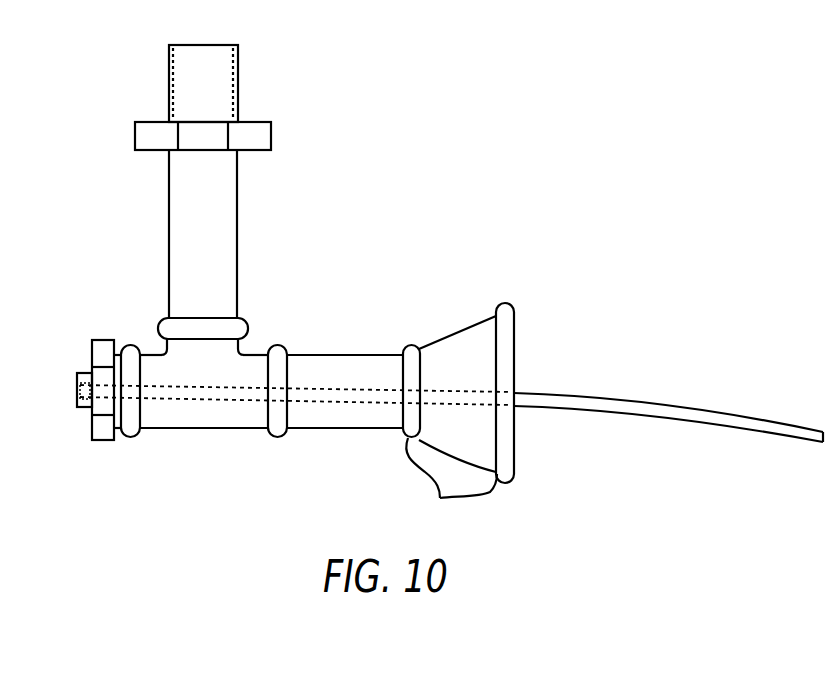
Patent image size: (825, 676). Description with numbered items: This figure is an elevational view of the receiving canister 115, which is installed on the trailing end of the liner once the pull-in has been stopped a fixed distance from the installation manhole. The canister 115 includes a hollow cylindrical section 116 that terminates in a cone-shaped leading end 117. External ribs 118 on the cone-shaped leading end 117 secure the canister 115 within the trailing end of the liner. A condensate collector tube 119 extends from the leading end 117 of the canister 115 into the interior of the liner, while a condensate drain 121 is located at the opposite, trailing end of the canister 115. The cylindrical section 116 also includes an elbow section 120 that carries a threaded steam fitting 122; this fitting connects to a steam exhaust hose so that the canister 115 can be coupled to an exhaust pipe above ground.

The receiving canister 115 is at (416, 286).
The hollow cylindrical section 116 is at (360, 355).
The cone-shaped leading end 117 is at (477, 318).
The external ribs 118 is at (451, 484).
The condensate collector tube 119 is at (669, 413).
The elbow section 120 is at (227, 428).
The condensate drain 121 is at (77, 392).
The threaded steam fitting 122 is at (238, 80).